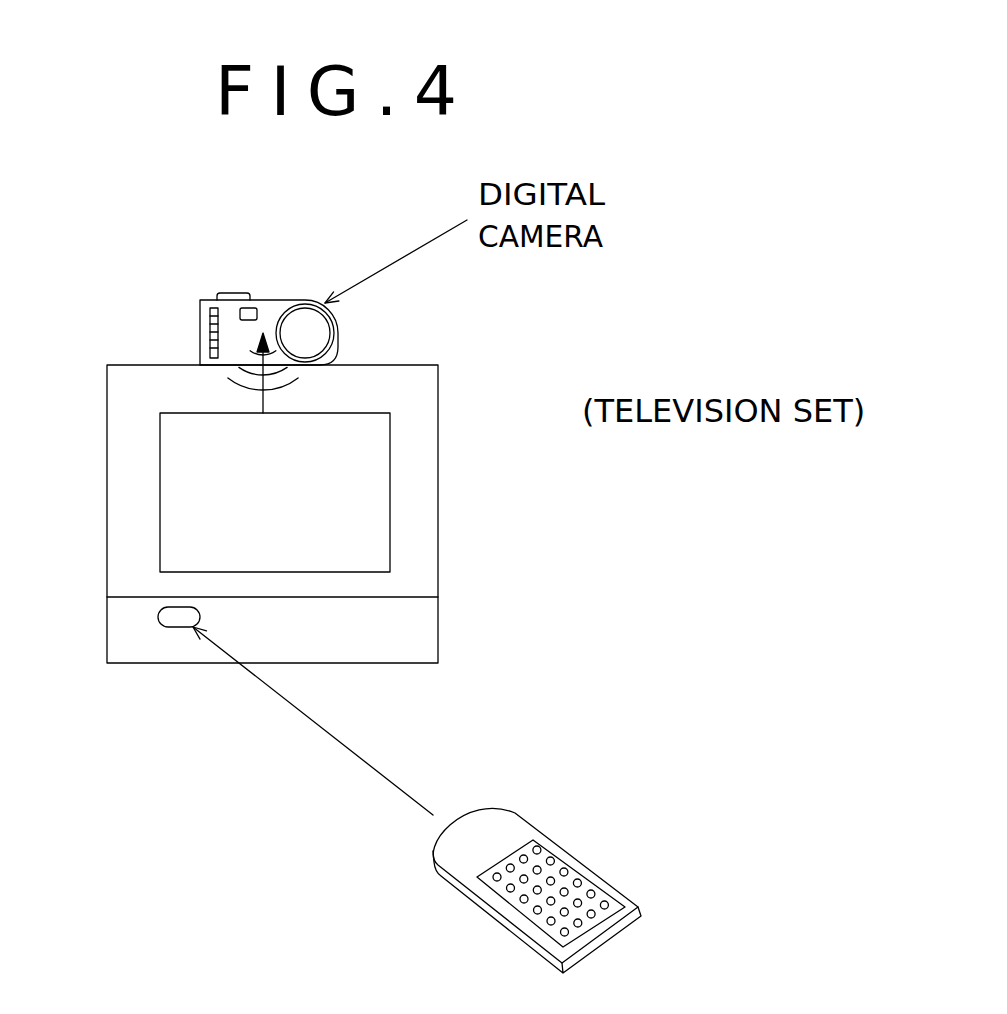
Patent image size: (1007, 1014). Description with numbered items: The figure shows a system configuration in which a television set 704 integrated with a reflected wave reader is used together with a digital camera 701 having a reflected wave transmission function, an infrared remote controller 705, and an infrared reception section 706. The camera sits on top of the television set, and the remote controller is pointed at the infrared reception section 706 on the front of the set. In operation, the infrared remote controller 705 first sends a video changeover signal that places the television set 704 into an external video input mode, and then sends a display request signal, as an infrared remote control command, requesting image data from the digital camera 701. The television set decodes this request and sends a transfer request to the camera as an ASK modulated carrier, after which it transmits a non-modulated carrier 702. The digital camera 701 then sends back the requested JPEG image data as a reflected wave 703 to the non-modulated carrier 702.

The digital camera 701 is at (273, 299).
The non-modulated carrier 702 is at (267, 405).
The reflected wave 703 is at (232, 383).
The television set integrated with a reflected wave reader 704 is at (438, 412).
The infrared remote controller 705 is at (538, 830).
The infrared reception section 706 is at (158, 616).